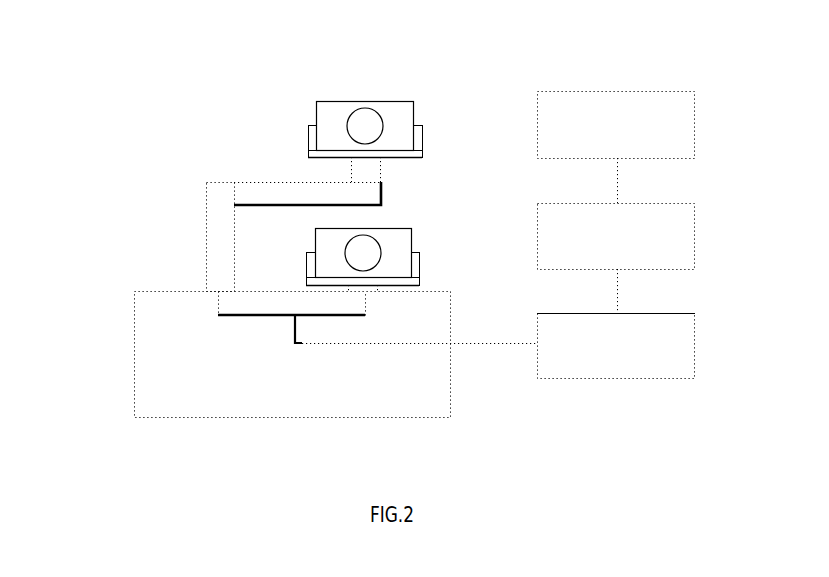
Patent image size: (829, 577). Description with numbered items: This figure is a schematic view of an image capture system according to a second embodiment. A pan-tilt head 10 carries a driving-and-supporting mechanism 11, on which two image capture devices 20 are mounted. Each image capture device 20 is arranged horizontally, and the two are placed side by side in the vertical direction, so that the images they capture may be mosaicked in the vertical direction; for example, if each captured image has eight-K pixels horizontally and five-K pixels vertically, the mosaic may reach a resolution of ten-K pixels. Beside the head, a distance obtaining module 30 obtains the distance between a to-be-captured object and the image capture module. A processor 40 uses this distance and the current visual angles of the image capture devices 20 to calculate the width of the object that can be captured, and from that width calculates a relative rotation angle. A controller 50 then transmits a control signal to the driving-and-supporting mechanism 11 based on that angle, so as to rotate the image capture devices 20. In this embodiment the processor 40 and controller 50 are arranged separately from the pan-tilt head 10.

The pan-tilt head 10 is at (135, 327).
The driving-and-supporting mechanism 11 is at (222, 221).
The image capture device 20 is at (338, 110).
The distance obtaining module 30 is at (637, 92).
The processor 40 is at (694, 223).
The controller 50 is at (694, 345).